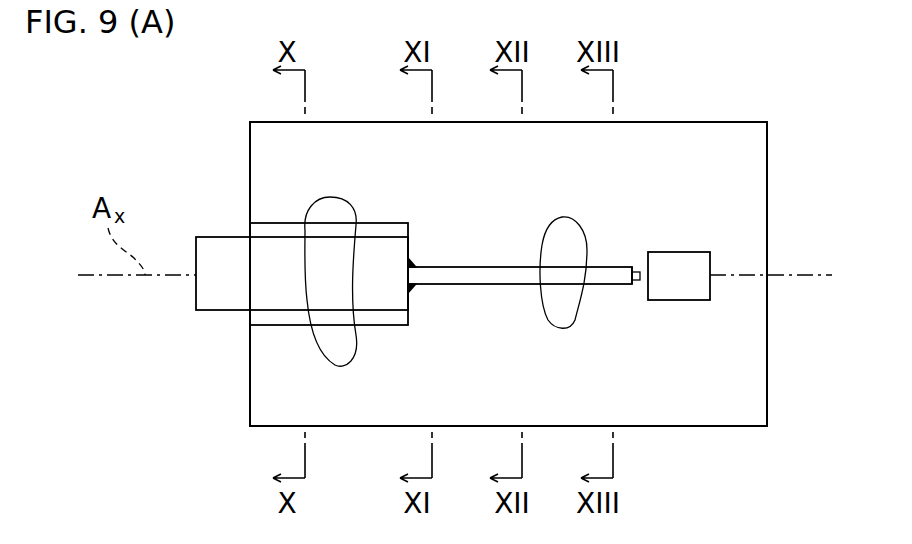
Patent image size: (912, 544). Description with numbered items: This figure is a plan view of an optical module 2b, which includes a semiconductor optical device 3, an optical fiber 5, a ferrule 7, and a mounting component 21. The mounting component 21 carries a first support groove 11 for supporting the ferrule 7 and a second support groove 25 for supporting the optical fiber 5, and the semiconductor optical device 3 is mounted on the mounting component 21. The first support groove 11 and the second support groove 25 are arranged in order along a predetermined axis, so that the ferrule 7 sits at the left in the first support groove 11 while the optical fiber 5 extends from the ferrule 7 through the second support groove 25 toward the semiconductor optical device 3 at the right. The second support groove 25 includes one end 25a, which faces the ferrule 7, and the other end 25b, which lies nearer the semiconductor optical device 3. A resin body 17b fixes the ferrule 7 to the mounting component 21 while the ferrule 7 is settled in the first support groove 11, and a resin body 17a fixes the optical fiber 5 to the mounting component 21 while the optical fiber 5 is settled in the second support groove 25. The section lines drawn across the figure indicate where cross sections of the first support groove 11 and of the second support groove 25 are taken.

The optical module 2b is at (818, 66).
The semiconductor optical device 3 is at (696, 300).
The optical fiber 5 is at (468, 285).
The ferrule 7 is at (222, 310).
The first support groove 11 is at (272, 223).
The resin body 17a is at (565, 219).
The resin body 17b is at (338, 203).
The mounting component 21 is at (745, 427).
The second support groove 25 is at (630, 290).
The one end of the second support groove 25a is at (413, 262).
The other end of the second support groove 25b is at (638, 272).